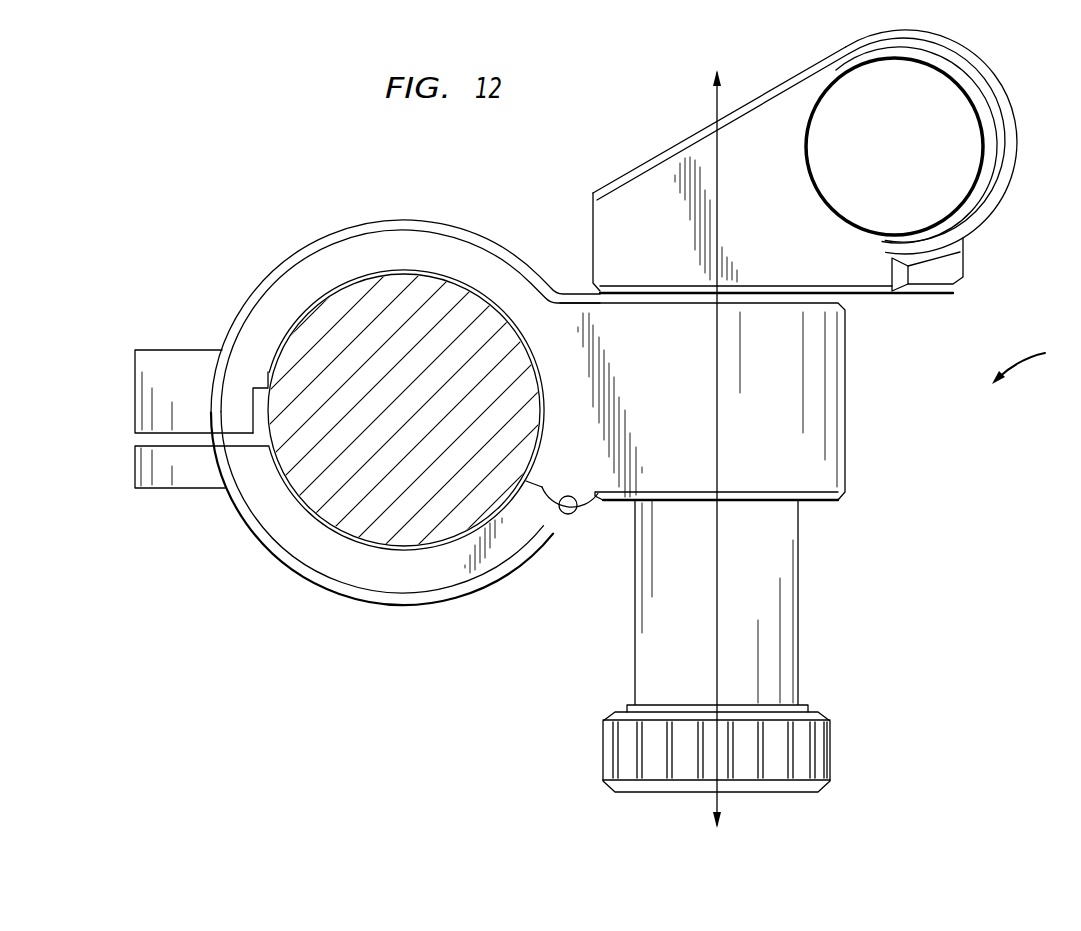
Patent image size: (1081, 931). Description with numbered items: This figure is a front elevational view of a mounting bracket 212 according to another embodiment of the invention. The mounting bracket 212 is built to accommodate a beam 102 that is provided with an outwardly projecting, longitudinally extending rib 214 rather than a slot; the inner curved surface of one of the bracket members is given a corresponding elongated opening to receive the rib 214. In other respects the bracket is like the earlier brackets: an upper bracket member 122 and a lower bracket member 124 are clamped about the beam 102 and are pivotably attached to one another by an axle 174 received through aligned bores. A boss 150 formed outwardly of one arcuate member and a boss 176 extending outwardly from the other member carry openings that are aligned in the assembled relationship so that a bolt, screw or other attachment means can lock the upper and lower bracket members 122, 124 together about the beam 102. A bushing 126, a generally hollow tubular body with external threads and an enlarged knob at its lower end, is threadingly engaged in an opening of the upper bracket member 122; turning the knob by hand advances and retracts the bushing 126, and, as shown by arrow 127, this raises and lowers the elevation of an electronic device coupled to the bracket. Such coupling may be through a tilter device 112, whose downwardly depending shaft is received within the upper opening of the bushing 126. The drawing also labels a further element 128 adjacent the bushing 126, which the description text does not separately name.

The beam 102 is at (355, 303).
The tilter device 112 is at (1010, 194).
The upper bracket member 122 is at (405, 221).
The lower bracket member 124 is at (297, 574).
The bushing 126 is at (800, 607).
The arrow 127 is at (718, 538).
The mounting body 128 is at (847, 380).
The boss 150 is at (137, 466).
The axle 174 is at (571, 510).
The boss 176 is at (137, 350).
The mounting bracket 212 is at (1035, 361).
The rib 214 is at (266, 407).